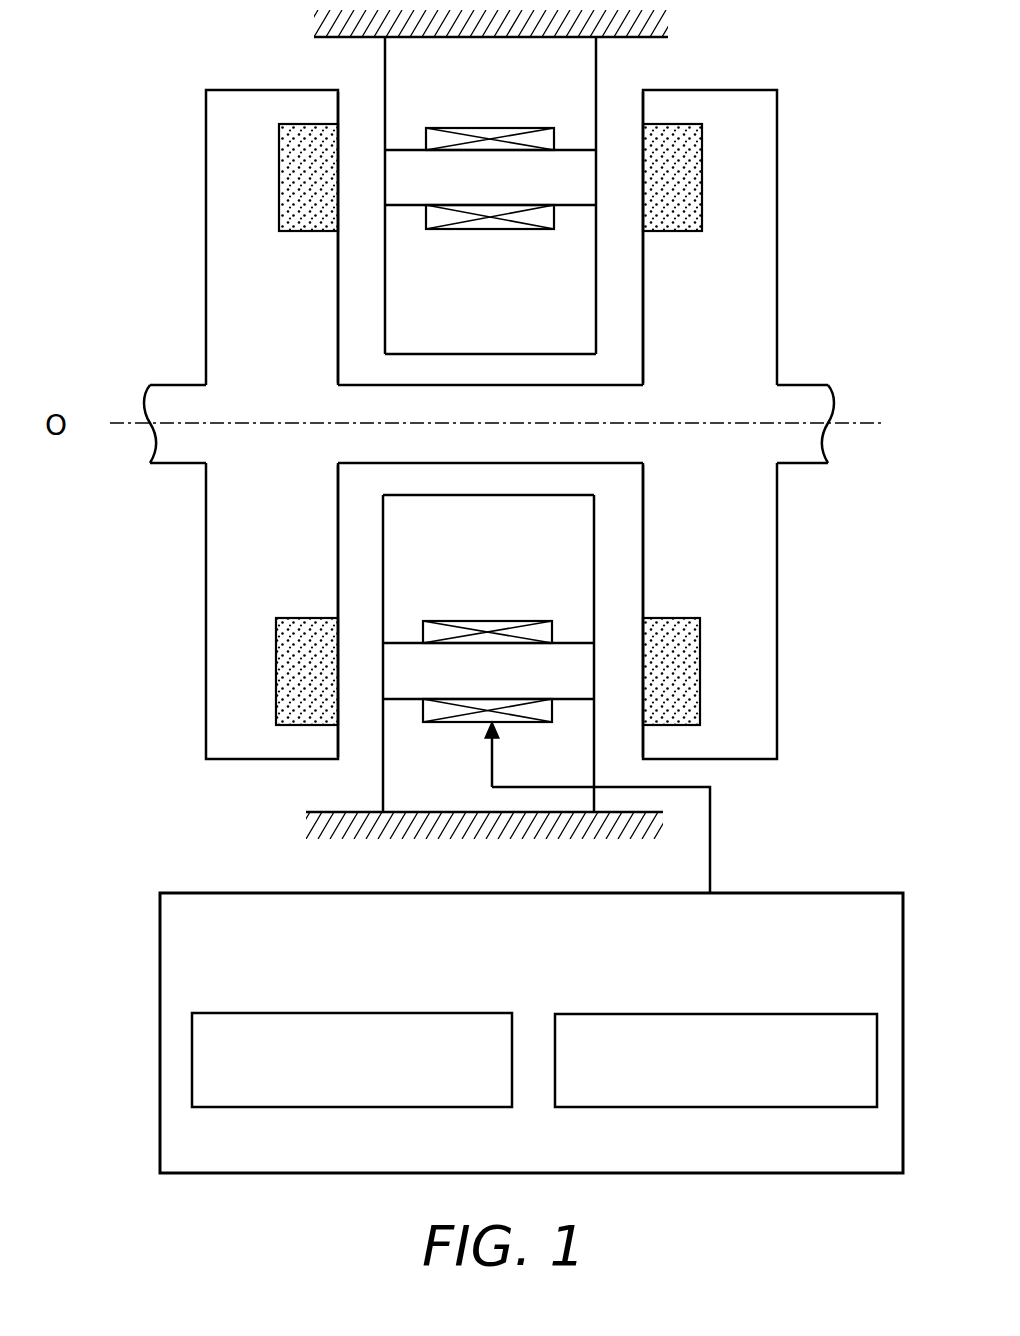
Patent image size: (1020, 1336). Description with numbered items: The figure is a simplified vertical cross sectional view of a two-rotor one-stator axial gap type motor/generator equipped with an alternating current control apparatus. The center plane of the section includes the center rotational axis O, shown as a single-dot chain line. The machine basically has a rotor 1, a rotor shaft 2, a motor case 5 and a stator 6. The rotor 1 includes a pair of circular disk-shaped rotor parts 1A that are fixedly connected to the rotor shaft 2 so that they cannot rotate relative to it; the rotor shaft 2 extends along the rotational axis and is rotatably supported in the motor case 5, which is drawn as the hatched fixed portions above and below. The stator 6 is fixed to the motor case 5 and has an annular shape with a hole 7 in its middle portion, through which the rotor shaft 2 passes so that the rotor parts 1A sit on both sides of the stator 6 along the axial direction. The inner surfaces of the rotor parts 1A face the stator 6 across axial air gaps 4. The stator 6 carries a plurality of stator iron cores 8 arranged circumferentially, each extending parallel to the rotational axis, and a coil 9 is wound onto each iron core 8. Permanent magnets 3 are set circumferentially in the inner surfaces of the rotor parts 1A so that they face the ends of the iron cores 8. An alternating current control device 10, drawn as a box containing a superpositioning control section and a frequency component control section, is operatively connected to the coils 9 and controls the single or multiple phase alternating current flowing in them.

The rotor 1 is at (186, 160).
The rotor part 1A is at (268, 88).
The rotor shaft 2 is at (800, 385).
The permanent magnet 3 is at (335, 172).
The air gap 4 is at (361, 320).
The motor case 5 is at (627, 38).
The stator 6 is at (463, 364).
The hole 7 is at (538, 355).
The stator iron core 8 is at (566, 193).
The coil 9 is at (425, 215).
The alternating current control device 10 is at (830, 893).